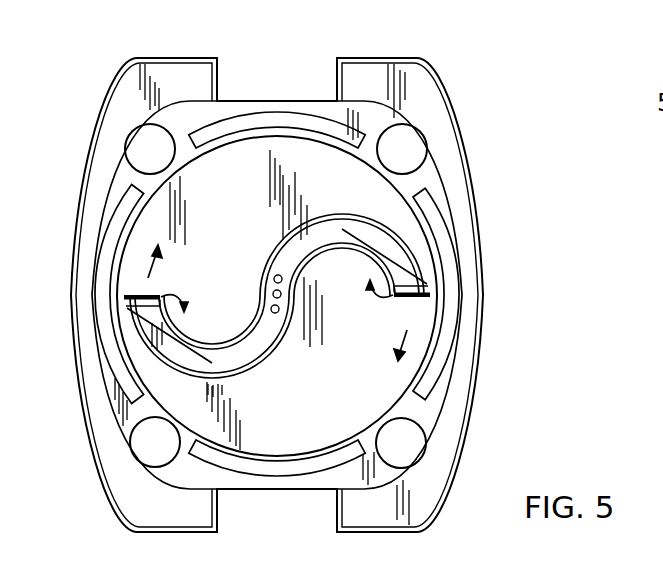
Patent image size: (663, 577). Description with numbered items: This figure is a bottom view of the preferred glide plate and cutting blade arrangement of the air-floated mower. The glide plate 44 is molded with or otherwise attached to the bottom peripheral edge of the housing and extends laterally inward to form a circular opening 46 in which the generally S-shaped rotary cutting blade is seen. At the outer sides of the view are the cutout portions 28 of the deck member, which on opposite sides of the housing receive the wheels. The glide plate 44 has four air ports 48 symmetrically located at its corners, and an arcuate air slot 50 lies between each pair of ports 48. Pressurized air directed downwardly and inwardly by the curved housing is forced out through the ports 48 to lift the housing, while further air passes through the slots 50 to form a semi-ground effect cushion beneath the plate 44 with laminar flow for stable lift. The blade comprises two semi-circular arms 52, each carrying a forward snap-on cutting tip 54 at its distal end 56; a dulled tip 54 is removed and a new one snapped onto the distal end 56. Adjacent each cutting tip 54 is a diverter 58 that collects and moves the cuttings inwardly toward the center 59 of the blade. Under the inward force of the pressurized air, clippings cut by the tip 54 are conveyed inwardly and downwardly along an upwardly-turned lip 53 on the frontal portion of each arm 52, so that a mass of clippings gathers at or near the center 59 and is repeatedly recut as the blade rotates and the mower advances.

The cutout portions 28 is at (277, 75).
The glide plate 44 is at (435, 182).
The circular opening 46 is at (188, 161).
The air ports 48 is at (428, 149).
The arcuate air slot 50 is at (438, 380).
The arm 52 is at (347, 223).
The upwardly-turned lip 53 is at (318, 257).
The cutting tip 54 is at (139, 295).
The distal end 56 is at (182, 289).
The diverter 58 is at (128, 310).
The center 59 is at (271, 293).